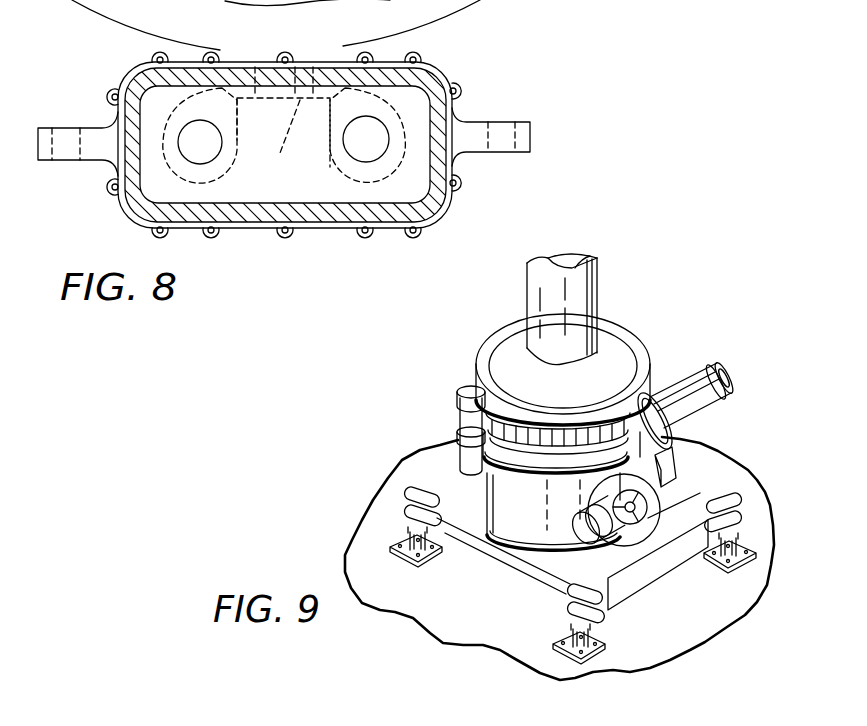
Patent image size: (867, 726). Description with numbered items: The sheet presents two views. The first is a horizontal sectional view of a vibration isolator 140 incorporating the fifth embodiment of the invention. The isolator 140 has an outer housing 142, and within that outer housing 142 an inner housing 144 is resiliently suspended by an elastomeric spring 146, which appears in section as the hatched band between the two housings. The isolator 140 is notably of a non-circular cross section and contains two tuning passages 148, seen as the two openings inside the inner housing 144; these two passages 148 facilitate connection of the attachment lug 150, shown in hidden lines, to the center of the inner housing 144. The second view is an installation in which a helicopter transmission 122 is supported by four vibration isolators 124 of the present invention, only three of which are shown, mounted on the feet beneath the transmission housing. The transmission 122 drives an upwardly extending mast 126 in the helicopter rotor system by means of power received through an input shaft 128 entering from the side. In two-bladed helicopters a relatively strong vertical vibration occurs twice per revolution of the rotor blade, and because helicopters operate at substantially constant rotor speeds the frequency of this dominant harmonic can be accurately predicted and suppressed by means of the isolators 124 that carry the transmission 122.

In FIG. 8, the vibration isolator 140 is at (490, 43).
In FIG. 8, the outer housing 142 is at (457, 123).
In FIG. 8, the inner housing 144 is at (323, 192).
In FIG. 8, the elastomeric spring 146 is at (132, 205).
In FIG. 8, the tuning passages 148 is at (215, 153).
In FIG. 8, the attachment lug 150 is at (284, 125).
In FIG. 9, the helicopter transmission 122 is at (470, 341).
In FIG. 9, the vibration isolators 124 is at (565, 632).
In FIG. 9, the mast 126 is at (598, 284).
In FIG. 9, the input shaft 128 is at (705, 362).